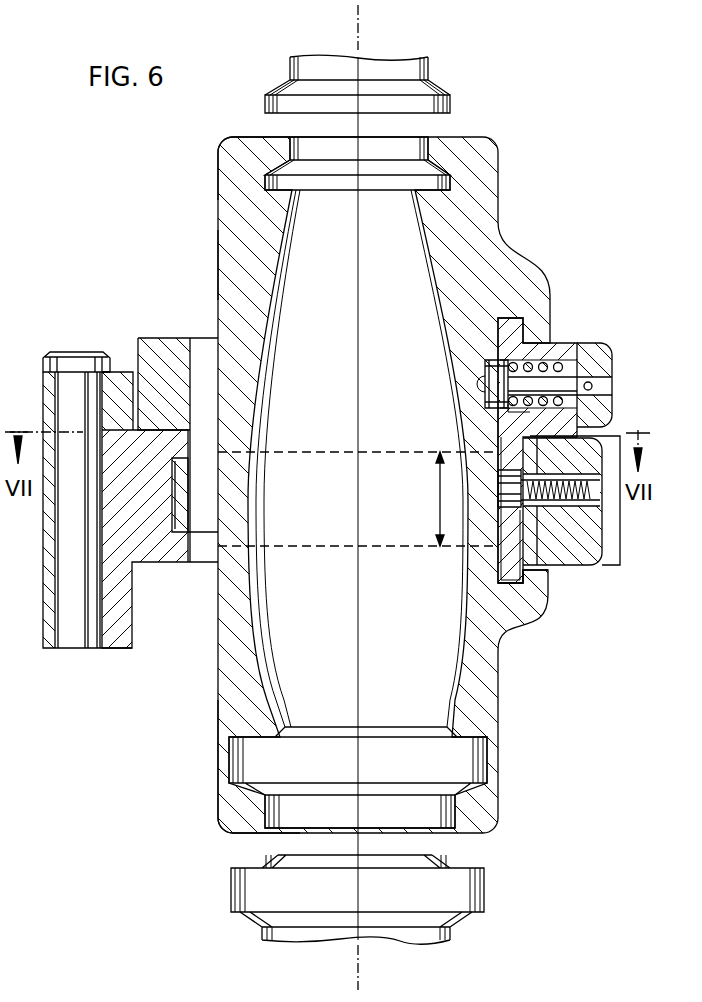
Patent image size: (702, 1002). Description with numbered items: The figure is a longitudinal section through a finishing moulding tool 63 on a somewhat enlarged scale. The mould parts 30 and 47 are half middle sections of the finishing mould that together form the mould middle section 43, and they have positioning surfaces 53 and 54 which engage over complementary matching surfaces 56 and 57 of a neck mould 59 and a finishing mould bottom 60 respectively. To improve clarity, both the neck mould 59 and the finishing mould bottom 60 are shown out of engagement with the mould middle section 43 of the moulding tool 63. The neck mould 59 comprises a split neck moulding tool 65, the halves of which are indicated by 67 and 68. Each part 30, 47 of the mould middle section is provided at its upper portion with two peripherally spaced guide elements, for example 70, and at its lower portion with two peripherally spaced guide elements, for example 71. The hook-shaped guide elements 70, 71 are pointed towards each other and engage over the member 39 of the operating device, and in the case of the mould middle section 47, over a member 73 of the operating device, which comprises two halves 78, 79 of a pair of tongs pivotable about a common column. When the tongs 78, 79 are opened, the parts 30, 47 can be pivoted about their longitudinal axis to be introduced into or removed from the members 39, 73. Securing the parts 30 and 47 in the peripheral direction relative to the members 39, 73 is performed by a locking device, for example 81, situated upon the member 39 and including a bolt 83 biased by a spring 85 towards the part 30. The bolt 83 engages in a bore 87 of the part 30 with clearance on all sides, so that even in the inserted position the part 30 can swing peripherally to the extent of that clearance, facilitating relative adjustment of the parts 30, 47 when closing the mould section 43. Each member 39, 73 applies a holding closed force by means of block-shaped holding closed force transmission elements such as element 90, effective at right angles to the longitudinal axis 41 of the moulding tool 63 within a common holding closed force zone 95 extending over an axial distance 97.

The mould part 30 is at (501, 223).
The member of the operating device 39 is at (591, 569).
The longitudinal axis 41 is at (358, 46).
The mould middle section 43 is at (215, 188).
The mould part 47 is at (216, 266).
The positioning surface 53 is at (431, 170).
The positioning surface 54 is at (446, 828).
The matching surface 56 is at (453, 98).
The matching surface 57 is at (463, 920).
The neck mould 59 is at (288, 70).
The finishing mould bottom 60 is at (230, 890).
The moulding tool 63 is at (181, 778).
The split neck moulding tool 65 is at (434, 79).
The half of the neck moulding tool 67 is at (452, 103).
The half of the neck moulding tool 68 is at (266, 108).
The guide element 70 is at (545, 334).
The guide element 71 is at (537, 579).
The member of the operating device 73 is at (158, 337).
The half of the tongs 78 is at (572, 567).
The half of the tongs 79 is at (150, 563).
The locking device 81 is at (613, 369).
The bolt 83 is at (488, 404).
The spring 85 is at (498, 413).
The bore 87 is at (484, 381).
The holding closed force transmission element 90 is at (503, 501).
The holding closed force zone 95 is at (301, 549).
The axial distance 97 is at (438, 497).